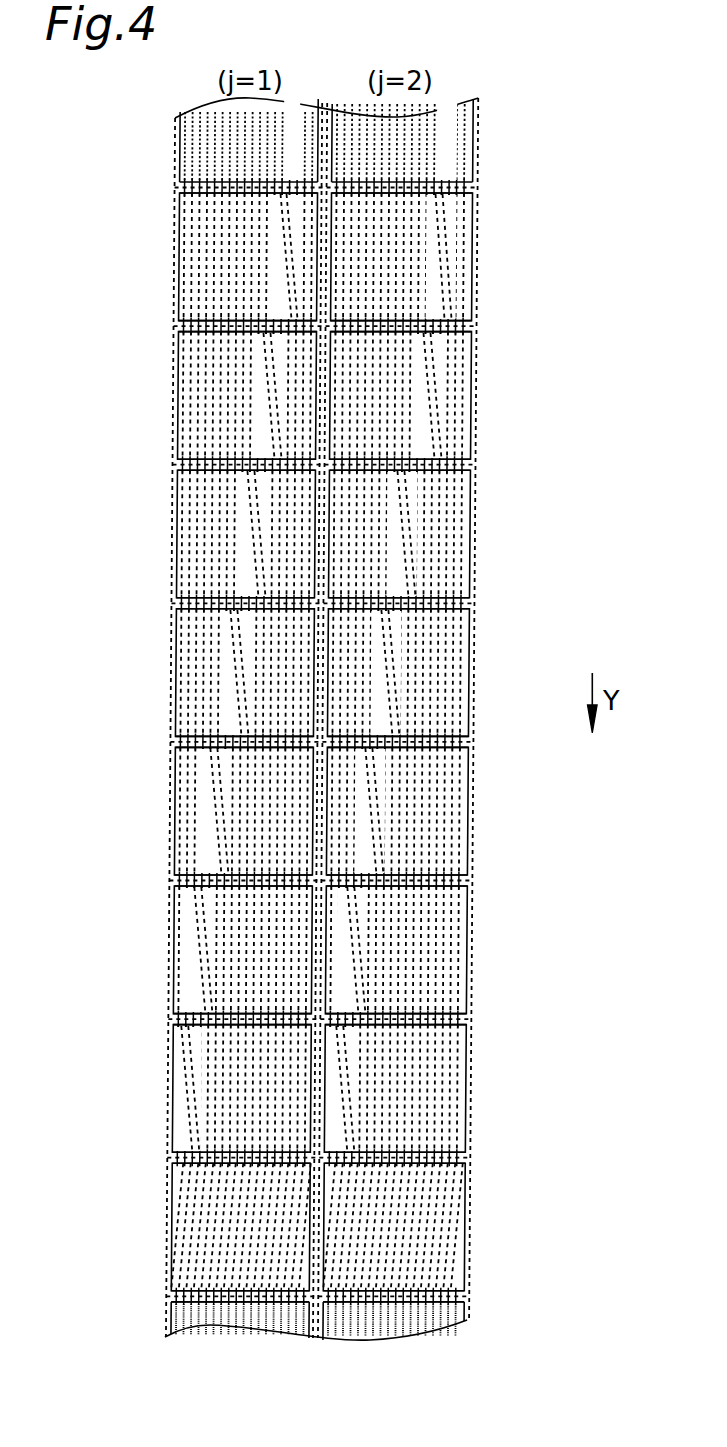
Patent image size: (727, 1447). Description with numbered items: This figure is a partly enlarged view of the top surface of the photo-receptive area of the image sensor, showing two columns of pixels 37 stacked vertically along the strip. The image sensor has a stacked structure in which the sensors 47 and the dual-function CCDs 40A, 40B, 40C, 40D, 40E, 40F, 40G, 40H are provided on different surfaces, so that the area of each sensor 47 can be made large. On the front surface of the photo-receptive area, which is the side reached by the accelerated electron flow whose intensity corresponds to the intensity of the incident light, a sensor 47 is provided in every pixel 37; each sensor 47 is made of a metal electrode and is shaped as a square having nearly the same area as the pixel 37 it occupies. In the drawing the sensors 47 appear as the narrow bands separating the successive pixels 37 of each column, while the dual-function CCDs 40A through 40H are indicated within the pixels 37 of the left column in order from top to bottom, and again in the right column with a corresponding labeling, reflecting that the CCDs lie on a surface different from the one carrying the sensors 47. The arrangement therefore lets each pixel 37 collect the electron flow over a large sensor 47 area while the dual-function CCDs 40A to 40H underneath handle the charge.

The pixel 37 is at (175, 113).
The sensor 47 is at (179, 180).
The dual-function CCD 40A is at (300, 133).
The dual-function CCD 40B is at (280, 230).
The dual-function CCD 40C is at (258, 361).
The dual-function CCD 40D is at (246, 513).
The dual-function CCD 40E is at (227, 651).
The dual-function CCD 40F is at (212, 782).
The dual-function CCD 40G is at (196, 928).
The dual-function CCD 40H is at (183, 1073).